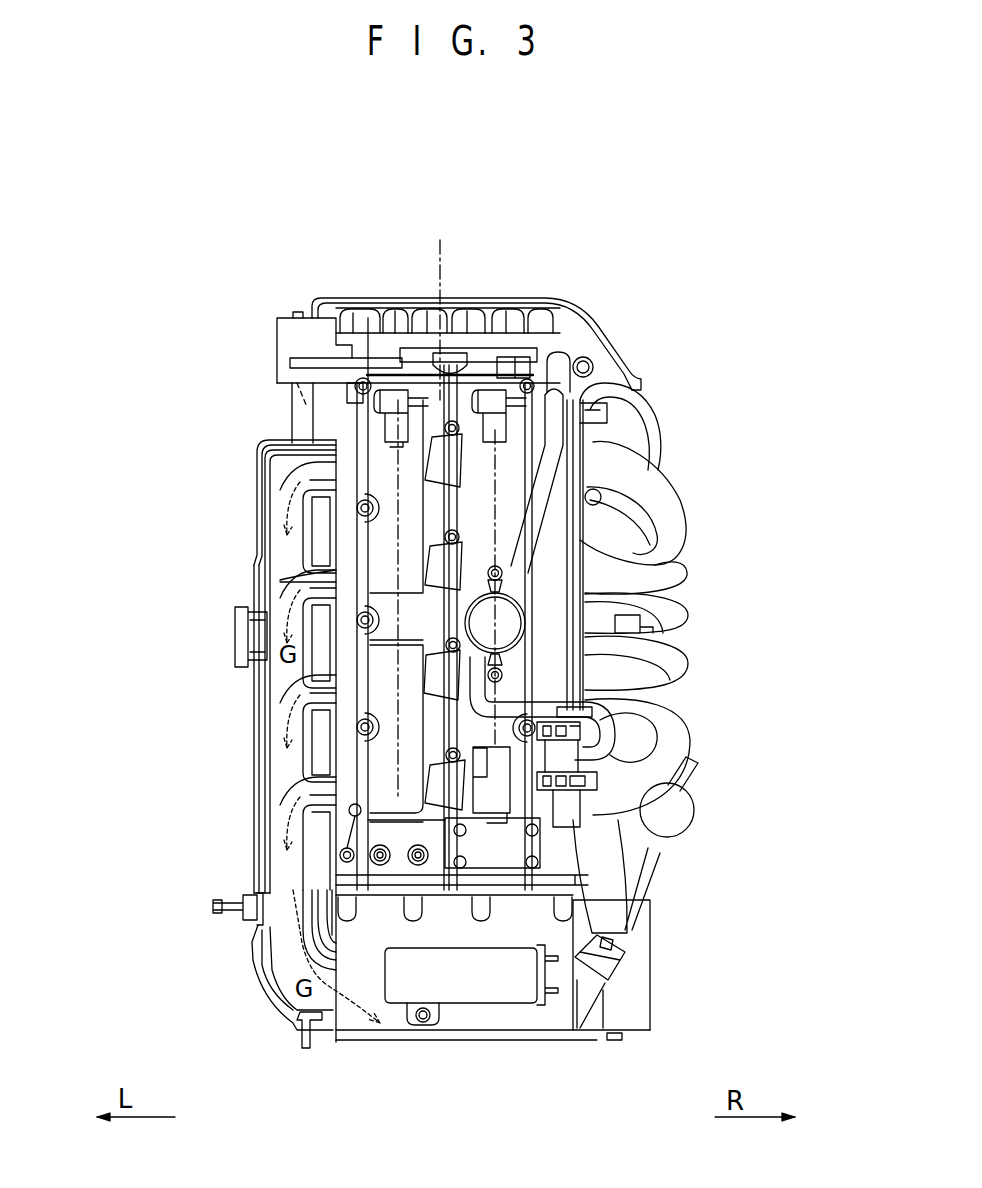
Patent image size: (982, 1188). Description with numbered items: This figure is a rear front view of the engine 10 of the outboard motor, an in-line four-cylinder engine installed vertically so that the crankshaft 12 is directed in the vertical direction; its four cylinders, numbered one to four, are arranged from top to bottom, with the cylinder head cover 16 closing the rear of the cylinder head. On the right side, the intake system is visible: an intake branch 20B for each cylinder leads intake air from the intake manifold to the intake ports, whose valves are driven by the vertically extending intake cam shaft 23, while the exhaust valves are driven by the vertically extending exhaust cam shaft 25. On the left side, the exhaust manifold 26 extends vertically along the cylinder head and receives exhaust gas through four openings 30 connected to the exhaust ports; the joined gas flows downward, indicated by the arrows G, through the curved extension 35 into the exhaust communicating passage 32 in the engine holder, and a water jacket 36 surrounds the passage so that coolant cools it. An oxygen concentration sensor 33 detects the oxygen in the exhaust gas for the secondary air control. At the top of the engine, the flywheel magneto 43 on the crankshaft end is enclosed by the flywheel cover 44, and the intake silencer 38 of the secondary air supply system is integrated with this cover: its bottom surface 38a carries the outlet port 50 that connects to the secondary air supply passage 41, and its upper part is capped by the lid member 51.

The engine 10 is at (595, 253).
The crankshaft 12 is at (437, 250).
The cylinder head cover 16 is at (593, 540).
The intake branch 20B is at (660, 455).
The intake cam shaft 23 is at (606, 470).
The exhaust cam shaft 25 is at (398, 530).
The exhaust manifold 26 is at (258, 743).
The opening 30 is at (345, 473).
The exhaust communicating passage 32 is at (393, 1023).
The oxygen concentration sensor 33 is at (223, 915).
The extension 35 is at (270, 980).
The water jacket 36 is at (256, 560).
The intake silencer 38 is at (285, 330).
The bottom surface 38a is at (278, 390).
The secondary air supply passage 41 is at (293, 430).
The flywheel magneto 43 is at (388, 322).
The flywheel cover 44 is at (350, 298).
The outlet port 50 is at (290, 405).
The lid member 51 is at (297, 312).